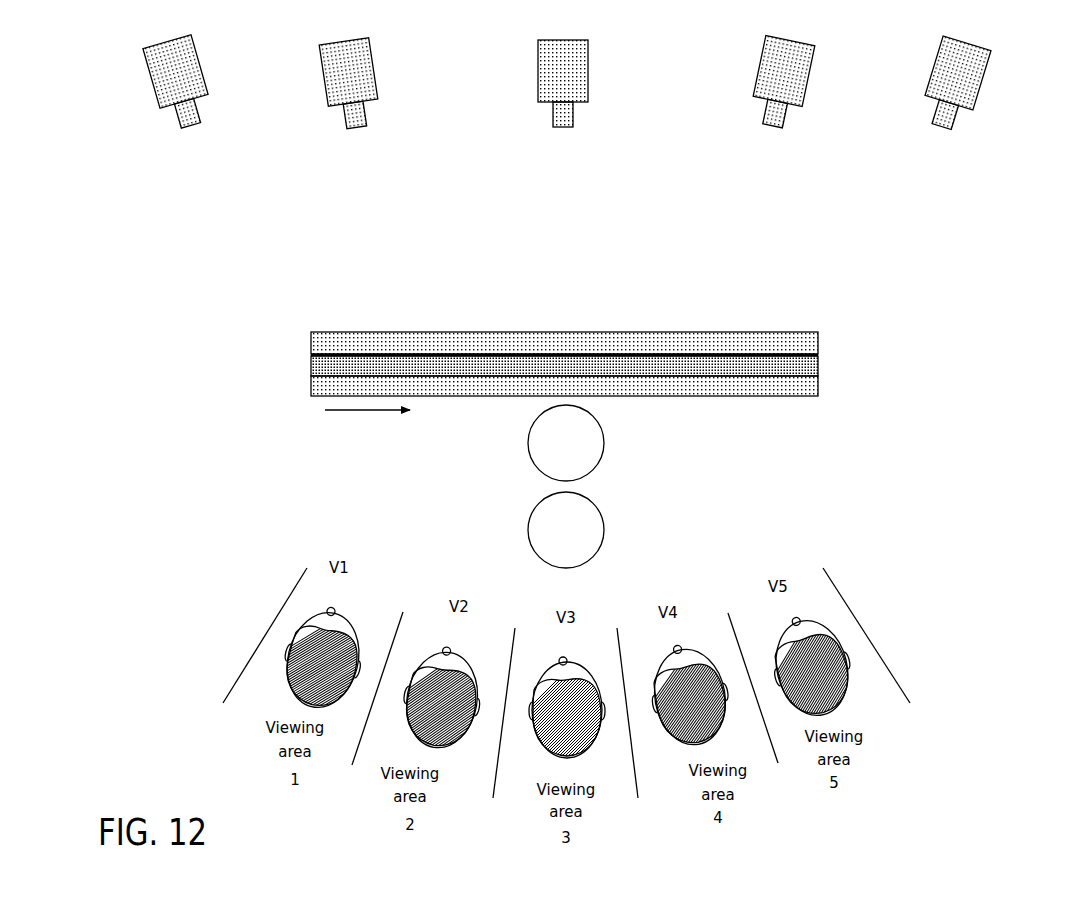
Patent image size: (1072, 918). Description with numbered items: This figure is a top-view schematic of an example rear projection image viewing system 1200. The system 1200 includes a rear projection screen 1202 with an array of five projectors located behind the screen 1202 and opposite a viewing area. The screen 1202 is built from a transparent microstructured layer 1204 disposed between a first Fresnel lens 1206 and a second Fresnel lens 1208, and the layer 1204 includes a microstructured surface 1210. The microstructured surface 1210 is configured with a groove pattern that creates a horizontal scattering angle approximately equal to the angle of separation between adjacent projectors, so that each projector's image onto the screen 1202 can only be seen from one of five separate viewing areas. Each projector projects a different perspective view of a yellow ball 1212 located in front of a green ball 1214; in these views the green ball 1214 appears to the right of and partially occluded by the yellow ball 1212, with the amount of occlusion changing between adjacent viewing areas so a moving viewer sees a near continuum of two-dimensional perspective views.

The rear projection image viewing system 1200 is at (590, 263).
The rear projection screen 1202 is at (584, 351).
The transparent microstructured layer 1204 is at (625, 358).
The first Fresnel lens 1206 is at (653, 388).
The second Fresnel lens 1208 is at (440, 340).
The microstructured surface 1210 is at (515, 355).
The yellow ball 1212 is at (604, 520).
The green ball 1214 is at (528, 441).